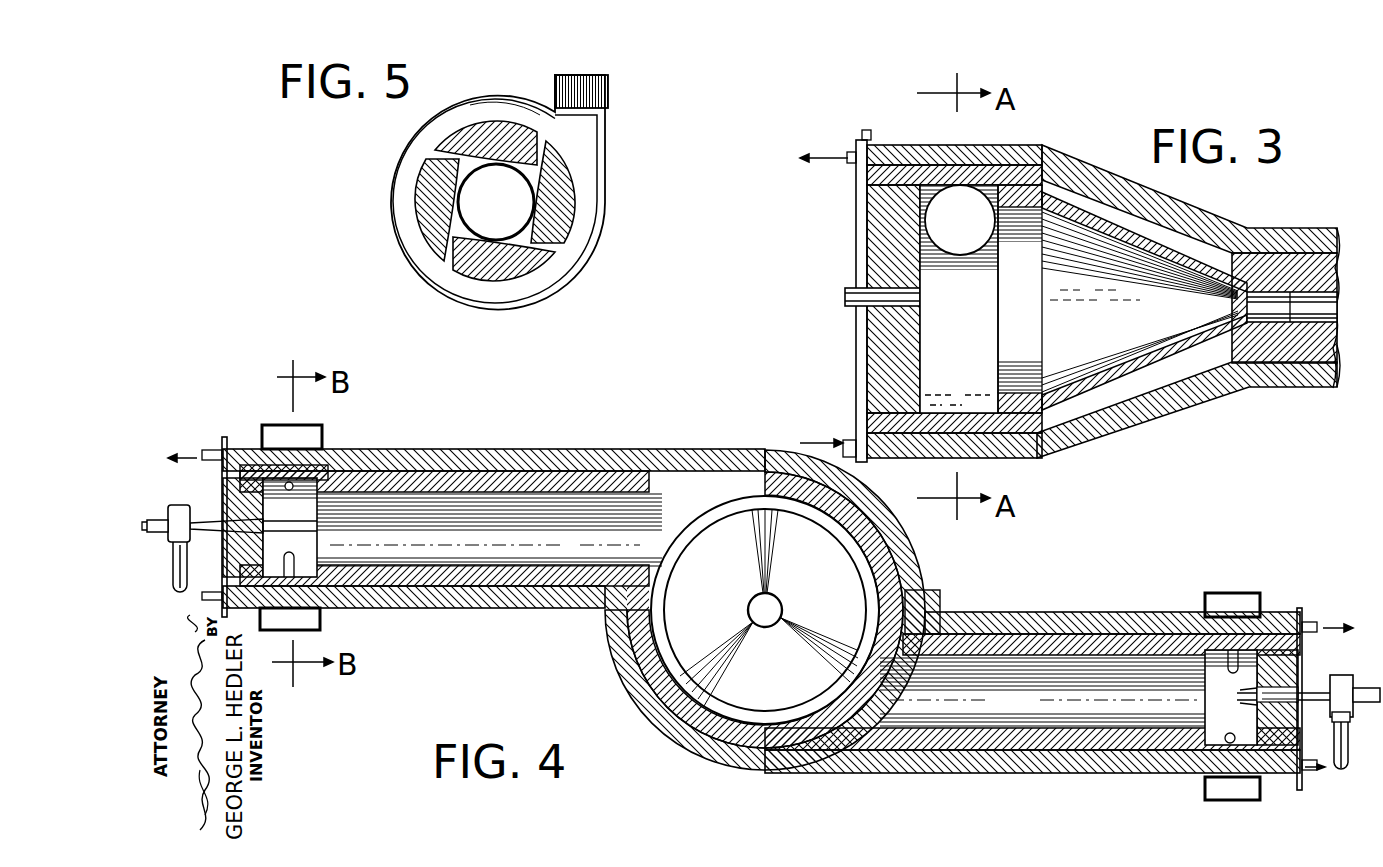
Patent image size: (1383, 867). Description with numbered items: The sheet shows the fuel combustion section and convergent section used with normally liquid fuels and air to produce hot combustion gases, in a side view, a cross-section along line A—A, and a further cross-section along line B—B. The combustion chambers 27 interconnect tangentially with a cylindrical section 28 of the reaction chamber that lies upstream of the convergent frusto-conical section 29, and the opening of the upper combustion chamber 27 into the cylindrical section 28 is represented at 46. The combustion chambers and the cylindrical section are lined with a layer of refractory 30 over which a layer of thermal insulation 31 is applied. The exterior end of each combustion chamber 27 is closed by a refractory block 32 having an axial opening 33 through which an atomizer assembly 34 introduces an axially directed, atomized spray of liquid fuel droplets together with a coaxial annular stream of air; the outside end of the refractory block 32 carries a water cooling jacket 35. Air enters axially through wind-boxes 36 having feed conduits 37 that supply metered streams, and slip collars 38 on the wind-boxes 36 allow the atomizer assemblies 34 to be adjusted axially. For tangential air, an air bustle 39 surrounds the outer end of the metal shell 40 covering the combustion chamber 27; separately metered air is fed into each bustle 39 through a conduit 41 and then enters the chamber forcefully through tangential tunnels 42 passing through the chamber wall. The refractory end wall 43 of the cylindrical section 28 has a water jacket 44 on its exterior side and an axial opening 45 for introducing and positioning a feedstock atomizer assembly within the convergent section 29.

In FIG. 5, the combustion chamber 27 is at (511, 216).
In FIG. 4, the combustion chamber 27 is at (520, 545).
In FIG. 3, the cylindrical section 28 is at (966, 348).
In FIG. 3, the convergent frusto-conical section 29 is at (1166, 328).
In FIG. 3, the layer of refractory 30 is at (967, 422).
In FIG. 4, the layer of refractory 30 is at (688, 483).
In FIG. 3, the layer of thermal insulation 31 is at (937, 143).
In FIG. 4, the layer of thermal insulation 31 is at (558, 463).
In FIG. 4, the refractory block 32 is at (255, 462).
In FIG. 4, the axial opening 33 is at (253, 533).
In FIG. 4, the atomizer assembly 34 is at (152, 520).
In FIG. 4, the water cooling jacket 35 is at (217, 457).
In FIG. 4, the wind-box 36 is at (1338, 680).
In FIG. 4, the feed conduit 37 is at (178, 572).
In FIG. 4, the slip collar 38 is at (170, 507).
In FIG. 5, the air bustle 39 is at (533, 303).
In FIG. 4, the air bustle 39 is at (283, 425).
In FIG. 5, the metal shell 40 is at (490, 120).
In FIG. 4, the metal shell 40 is at (375, 450).
In FIG. 5, the conduit 41 is at (597, 88).
In FIG. 5, the tangential tunnel 42 is at (438, 159).
In FIG. 3, the refractory end wall 43 is at (882, 367).
In FIG. 3, the water jacket 44 is at (858, 224).
In FIG. 3, the axial opening 45 is at (872, 298).
In FIG. 3, the opening of the upper combustion chamber 46 is at (960, 210).